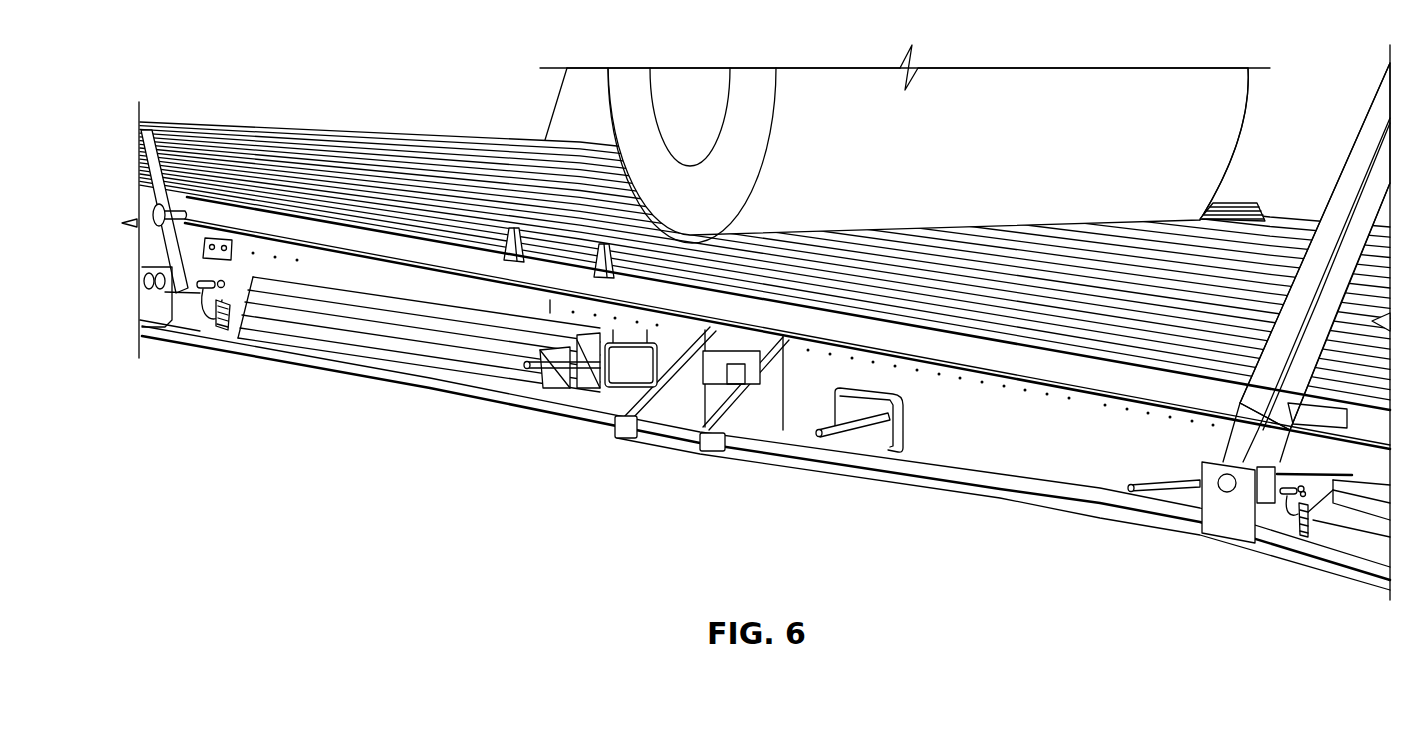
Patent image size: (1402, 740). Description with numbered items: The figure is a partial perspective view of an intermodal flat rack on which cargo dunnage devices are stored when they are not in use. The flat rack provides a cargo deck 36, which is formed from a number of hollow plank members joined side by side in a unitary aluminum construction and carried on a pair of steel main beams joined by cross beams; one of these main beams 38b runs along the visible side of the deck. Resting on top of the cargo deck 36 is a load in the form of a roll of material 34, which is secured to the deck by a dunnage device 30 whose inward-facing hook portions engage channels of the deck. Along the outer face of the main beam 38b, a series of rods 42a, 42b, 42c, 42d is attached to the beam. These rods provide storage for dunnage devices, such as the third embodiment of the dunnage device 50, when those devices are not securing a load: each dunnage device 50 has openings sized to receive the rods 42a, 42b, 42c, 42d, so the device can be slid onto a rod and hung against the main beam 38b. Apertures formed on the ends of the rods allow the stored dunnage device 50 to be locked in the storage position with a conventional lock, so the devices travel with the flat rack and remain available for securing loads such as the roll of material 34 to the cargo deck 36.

The dunnage device 30 is at (1246, 198).
The roll of material 34 is at (1248, 104).
The cargo deck 36 is at (1050, 345).
The main beam 38b is at (893, 483).
The rod 42a is at (211, 315).
The rod 42b is at (530, 366).
The rod 42c is at (820, 433).
The rod 42d is at (1133, 488).
The dunnage device 50 is at (384, 340).